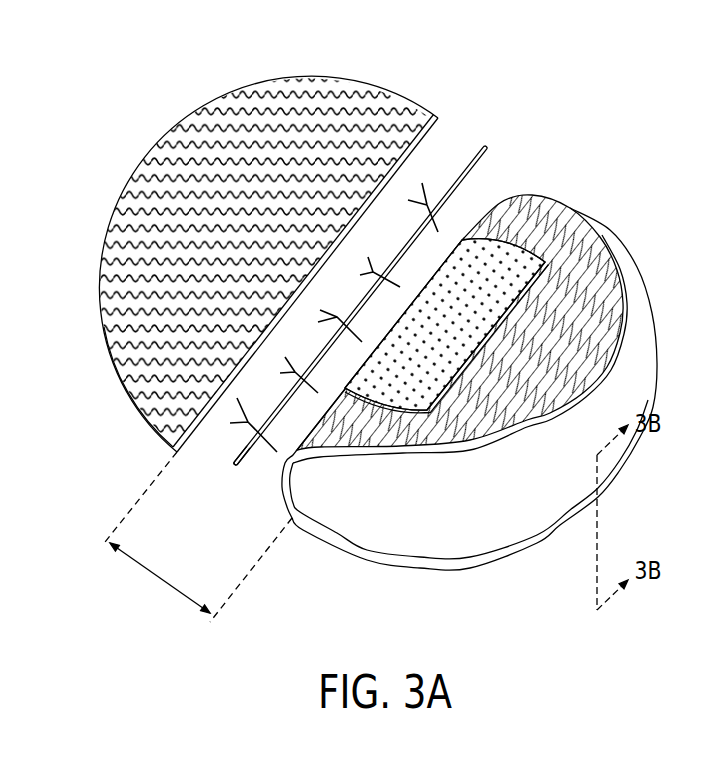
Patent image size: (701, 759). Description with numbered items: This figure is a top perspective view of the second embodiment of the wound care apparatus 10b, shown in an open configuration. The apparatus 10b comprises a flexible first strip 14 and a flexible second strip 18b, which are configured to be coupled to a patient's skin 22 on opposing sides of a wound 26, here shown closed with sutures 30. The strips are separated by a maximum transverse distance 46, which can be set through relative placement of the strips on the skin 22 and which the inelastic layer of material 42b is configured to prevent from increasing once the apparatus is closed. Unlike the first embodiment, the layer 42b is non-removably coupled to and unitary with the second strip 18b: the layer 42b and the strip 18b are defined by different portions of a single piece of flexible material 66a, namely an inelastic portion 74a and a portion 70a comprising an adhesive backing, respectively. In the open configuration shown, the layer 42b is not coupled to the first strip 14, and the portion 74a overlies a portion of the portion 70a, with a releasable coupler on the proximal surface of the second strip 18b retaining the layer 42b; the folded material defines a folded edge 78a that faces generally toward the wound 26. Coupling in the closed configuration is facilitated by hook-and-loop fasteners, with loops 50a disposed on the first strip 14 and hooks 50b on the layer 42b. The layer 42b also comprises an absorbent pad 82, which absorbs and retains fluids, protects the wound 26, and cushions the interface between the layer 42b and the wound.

The wound care apparatus 10b is at (243, 57).
The first strip 14 is at (268, 255).
The loops 50a is at (352, 93).
The wound 26 is at (476, 130).
The absorbent pad 82 is at (397, 347).
The sutures 30 is at (265, 452).
The second strip 18b is at (489, 371).
The hooks 50b is at (600, 260).
The folded edge 78a is at (500, 185).
The layer of material 42b is at (556, 258).
The inelastic portion 74a is at (413, 450).
The portion comprising an adhesive backing 70a is at (435, 537).
The flexible material 66a is at (643, 465).
The skin 22 is at (164, 513).
The maximum transverse distance 46 is at (158, 583).